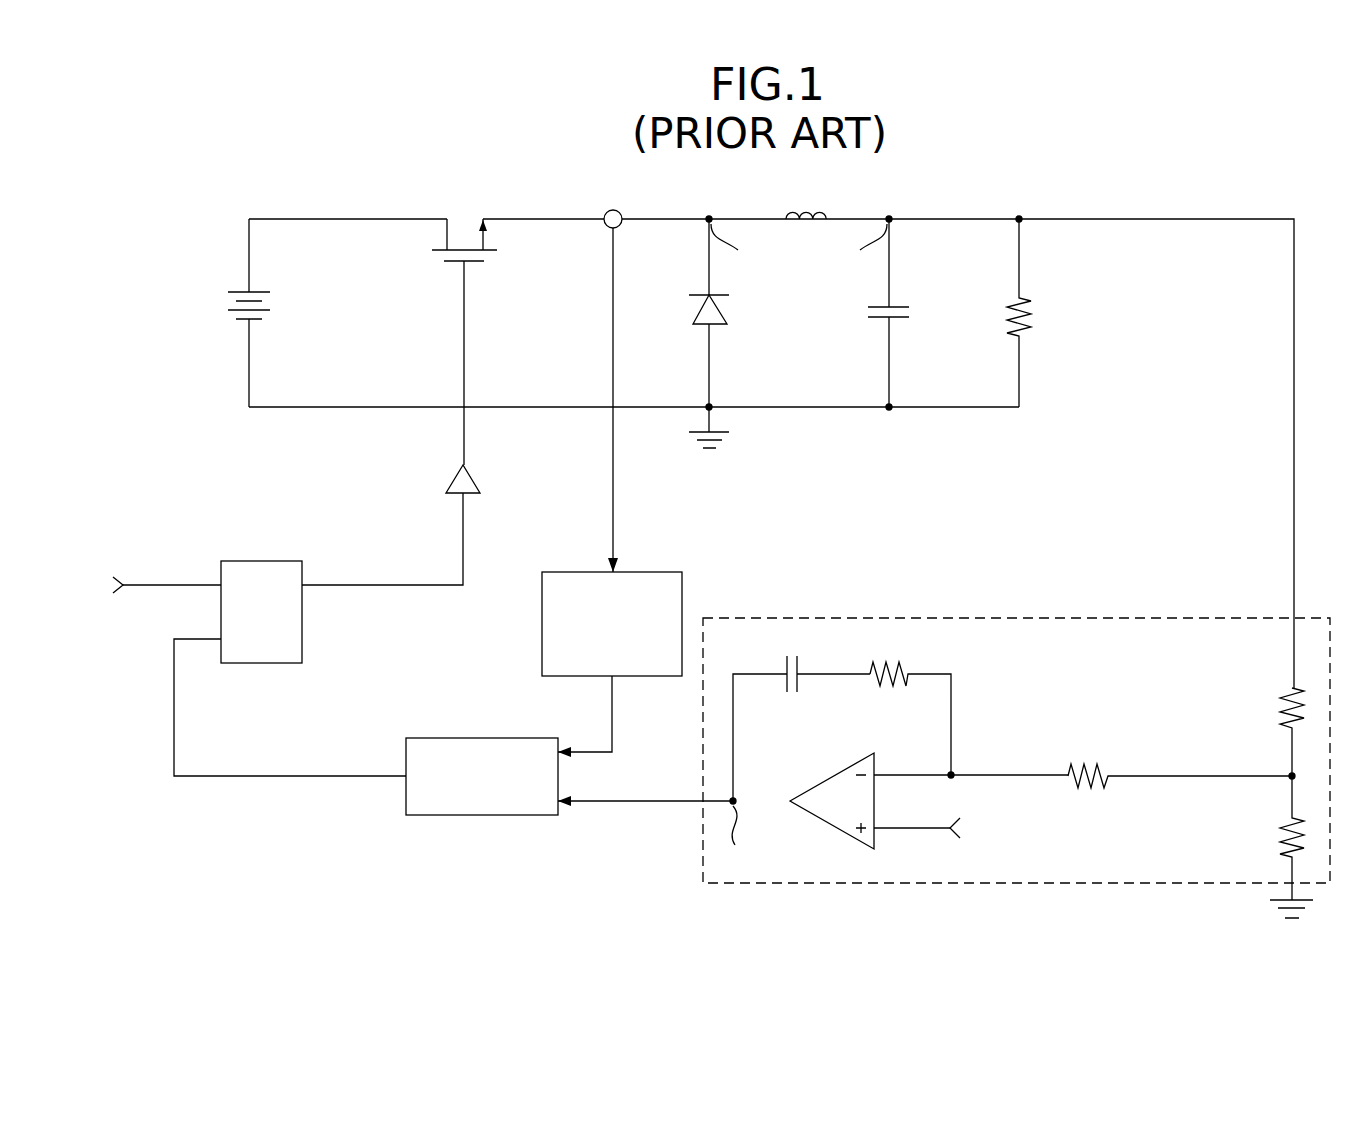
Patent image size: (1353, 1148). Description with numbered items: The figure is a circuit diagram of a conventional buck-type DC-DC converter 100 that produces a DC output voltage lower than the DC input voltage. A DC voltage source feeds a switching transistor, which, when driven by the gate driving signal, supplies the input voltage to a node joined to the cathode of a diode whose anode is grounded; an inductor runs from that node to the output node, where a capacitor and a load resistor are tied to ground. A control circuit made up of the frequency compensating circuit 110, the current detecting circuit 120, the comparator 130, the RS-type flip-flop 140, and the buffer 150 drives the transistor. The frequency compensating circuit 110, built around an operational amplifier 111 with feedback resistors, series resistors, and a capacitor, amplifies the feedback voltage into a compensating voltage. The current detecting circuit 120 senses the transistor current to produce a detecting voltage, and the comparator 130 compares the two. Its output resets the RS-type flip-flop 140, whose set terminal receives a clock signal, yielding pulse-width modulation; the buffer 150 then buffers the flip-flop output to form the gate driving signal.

The DC-DC converter 100 is at (985, 194).
The frequency compensating circuit 110 is at (1016, 618).
The operational amplifier 111 is at (833, 773).
The current detecting circuit 120 is at (654, 572).
The comparator 130 is at (487, 738).
The RS-type flip-flop 140 is at (262, 561).
The buffer 150 is at (478, 480).